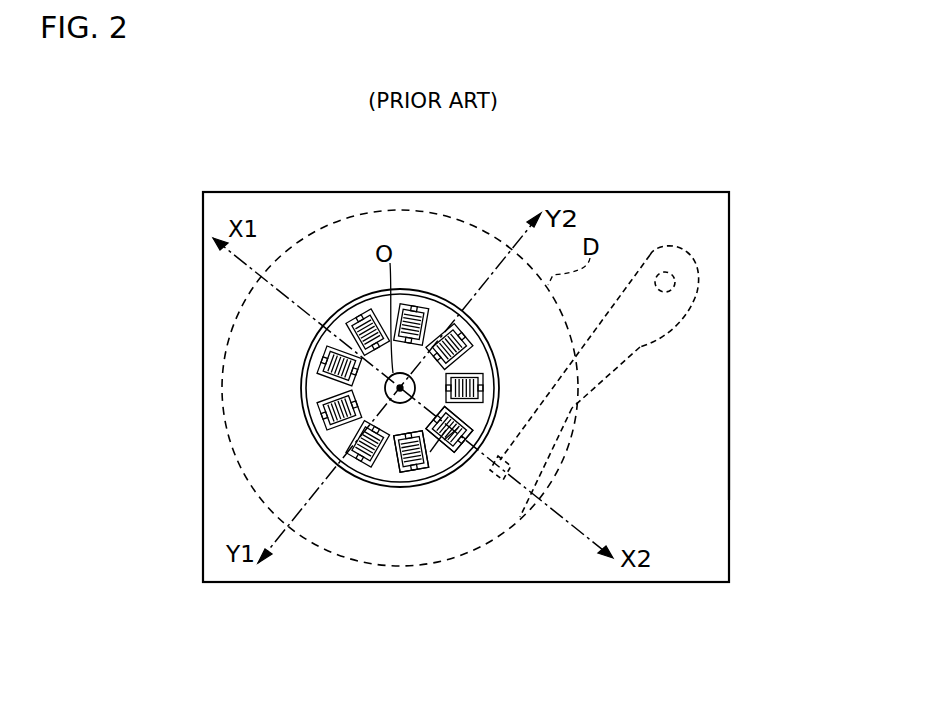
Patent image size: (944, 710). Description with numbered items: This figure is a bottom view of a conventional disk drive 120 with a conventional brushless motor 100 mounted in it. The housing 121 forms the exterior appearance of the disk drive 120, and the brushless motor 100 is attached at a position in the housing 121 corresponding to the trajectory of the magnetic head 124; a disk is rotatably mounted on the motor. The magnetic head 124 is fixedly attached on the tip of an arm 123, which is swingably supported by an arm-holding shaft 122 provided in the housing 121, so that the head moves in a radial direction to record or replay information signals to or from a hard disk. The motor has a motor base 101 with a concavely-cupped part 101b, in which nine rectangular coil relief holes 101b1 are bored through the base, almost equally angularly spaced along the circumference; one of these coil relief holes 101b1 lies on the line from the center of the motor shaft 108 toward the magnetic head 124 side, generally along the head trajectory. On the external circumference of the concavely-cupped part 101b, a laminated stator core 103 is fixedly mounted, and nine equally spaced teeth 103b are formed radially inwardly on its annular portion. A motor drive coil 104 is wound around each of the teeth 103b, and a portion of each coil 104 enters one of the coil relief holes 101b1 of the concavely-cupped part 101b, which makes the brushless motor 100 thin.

The brushless motor 100 is at (312, 432).
The motor base 101 is at (440, 657).
The concavely-cupped part 101b is at (388, 460).
The coil relief hole 101b1 is at (442, 435).
The stator core 103 is at (640, 625).
The tooth 103b is at (460, 440).
The motor drive coil 104 is at (450, 436).
The motor shaft 108 is at (385, 389).
The disk drive 120 is at (318, 182).
The housing 121 is at (729, 408).
The arm-holding shaft 122 is at (675, 282).
The arm 123 is at (640, 348).
The magnetic head 124 is at (513, 463).